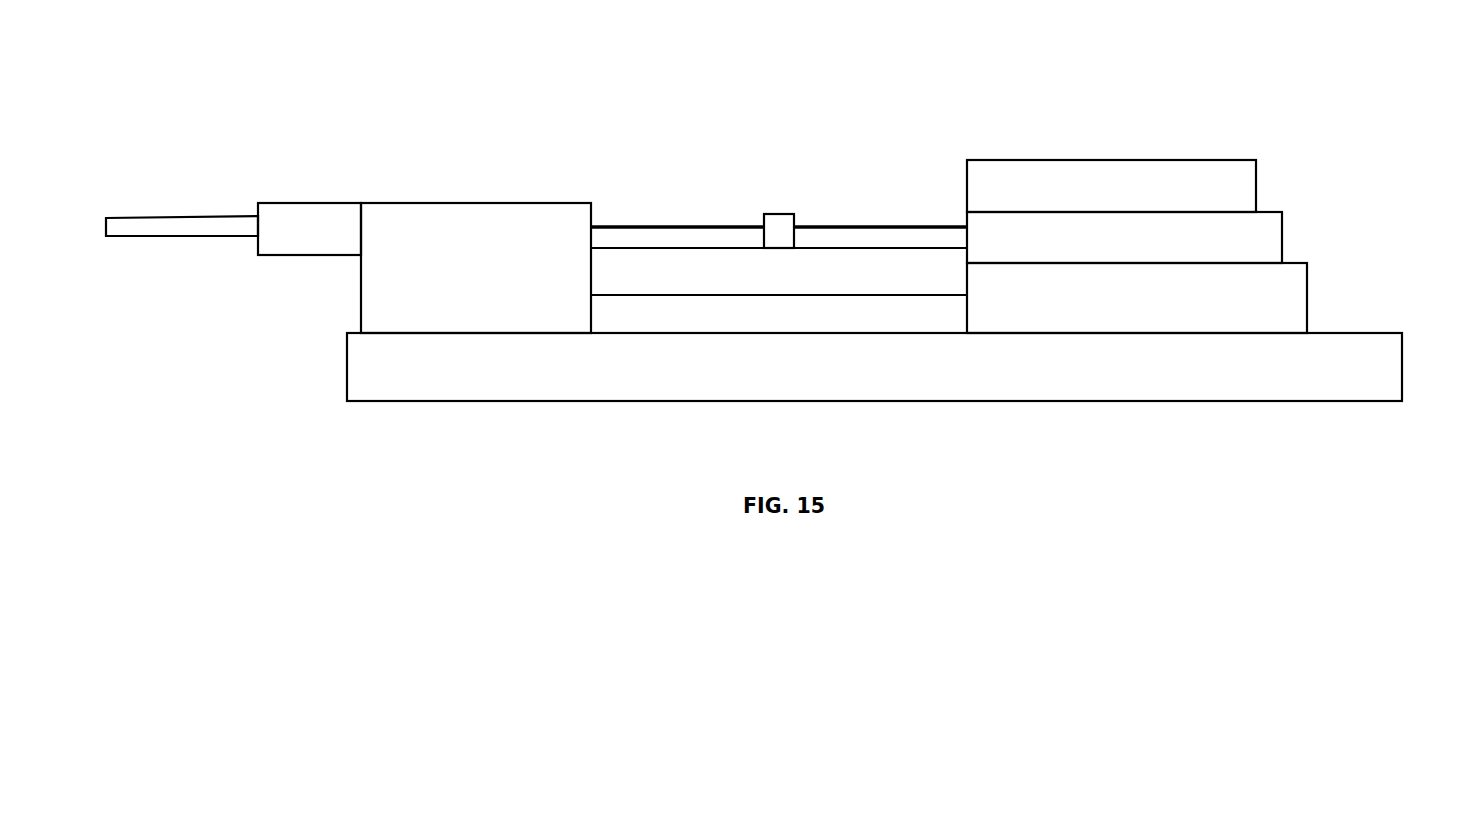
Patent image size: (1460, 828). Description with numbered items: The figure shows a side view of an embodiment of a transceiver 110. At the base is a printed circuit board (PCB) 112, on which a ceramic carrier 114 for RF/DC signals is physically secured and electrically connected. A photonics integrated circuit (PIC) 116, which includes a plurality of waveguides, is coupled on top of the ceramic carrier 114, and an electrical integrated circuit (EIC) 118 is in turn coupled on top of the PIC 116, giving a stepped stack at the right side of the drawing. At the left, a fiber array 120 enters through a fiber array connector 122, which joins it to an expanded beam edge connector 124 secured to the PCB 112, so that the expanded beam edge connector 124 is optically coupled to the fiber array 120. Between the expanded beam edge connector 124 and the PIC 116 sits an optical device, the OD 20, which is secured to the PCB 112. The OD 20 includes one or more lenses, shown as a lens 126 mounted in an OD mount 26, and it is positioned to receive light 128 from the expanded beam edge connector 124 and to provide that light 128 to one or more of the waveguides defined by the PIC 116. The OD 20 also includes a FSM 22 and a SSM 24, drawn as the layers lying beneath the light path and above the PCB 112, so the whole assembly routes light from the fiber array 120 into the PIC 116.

The transceiver 110 is at (688, 74).
The fiber array 120 is at (169, 221).
The fiber array connector 122 is at (315, 213).
The expanded beam edge connector 124 is at (497, 221).
The light 128 is at (660, 225).
The lens 126 is at (764, 226).
The OD mount 26 is at (778, 222).
The optical device (OD) 20 is at (781, 144).
The FSM 22 is at (603, 273).
The SSM 24 is at (708, 315).
The printed circuit board (PCB) 112 is at (850, 390).
The ceramic carrier 114 is at (1298, 296).
The photonics integrated circuit (PIC) 116 is at (1275, 240).
The electrical integrated circuit (EIC) 118 is at (1253, 189).